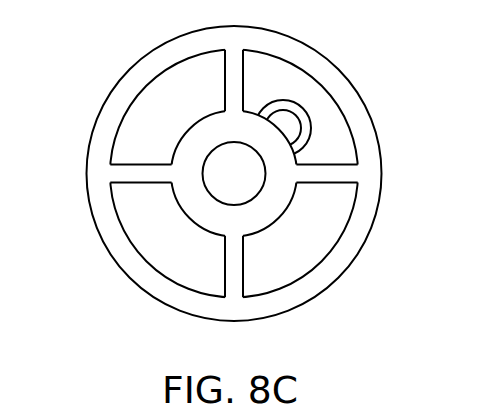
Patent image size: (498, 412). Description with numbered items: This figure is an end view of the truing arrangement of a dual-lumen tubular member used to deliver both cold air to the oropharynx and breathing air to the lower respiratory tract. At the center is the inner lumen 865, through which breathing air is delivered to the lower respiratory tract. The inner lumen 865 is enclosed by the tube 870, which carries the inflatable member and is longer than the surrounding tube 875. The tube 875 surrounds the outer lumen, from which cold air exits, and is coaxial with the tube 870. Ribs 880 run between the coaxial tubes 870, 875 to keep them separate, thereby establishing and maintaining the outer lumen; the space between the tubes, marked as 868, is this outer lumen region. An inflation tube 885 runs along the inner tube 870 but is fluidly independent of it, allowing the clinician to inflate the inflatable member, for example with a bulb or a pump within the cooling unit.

The inner lumen 865 is at (223, 187).
The web plate 868 is at (302, 247).
The tube 870 is at (198, 130).
The tube 875 is at (287, 47).
The ribs 880 is at (125, 172).
The inflation tube 885 is at (305, 112).